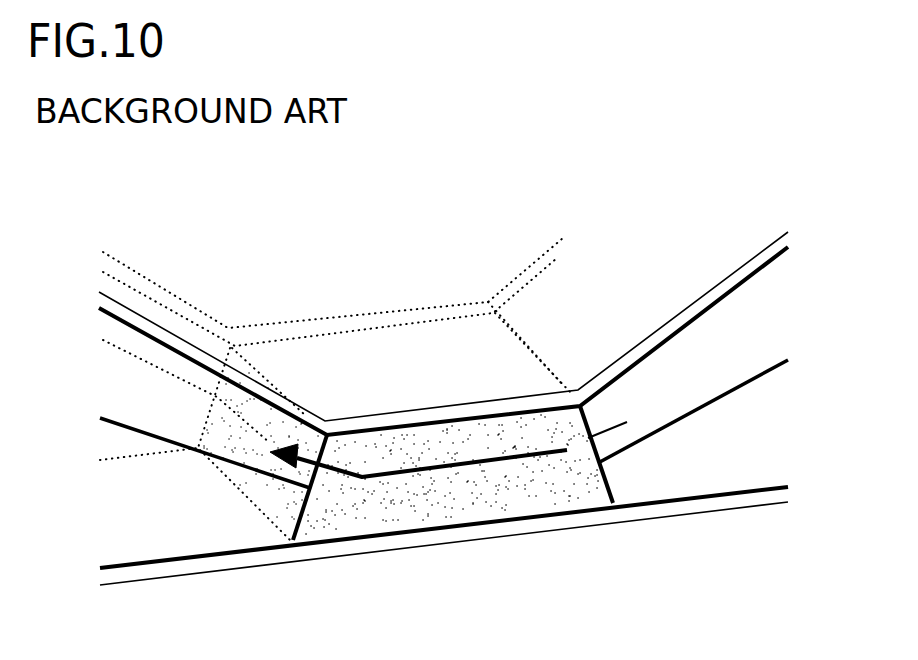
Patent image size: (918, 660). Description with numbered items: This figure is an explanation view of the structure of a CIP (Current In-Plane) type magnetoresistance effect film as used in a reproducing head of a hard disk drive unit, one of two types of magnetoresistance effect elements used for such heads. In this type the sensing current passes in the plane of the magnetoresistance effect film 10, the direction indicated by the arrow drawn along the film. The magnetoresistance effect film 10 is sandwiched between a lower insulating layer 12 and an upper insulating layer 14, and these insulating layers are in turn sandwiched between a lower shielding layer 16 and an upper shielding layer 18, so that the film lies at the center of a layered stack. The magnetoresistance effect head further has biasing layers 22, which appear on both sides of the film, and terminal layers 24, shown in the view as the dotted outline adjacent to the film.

The magnetoresistance effect film 10 is at (333, 520).
The lower insulating layer 12 is at (748, 500).
The upper insulating layer 14 is at (735, 292).
The lower shielding layer 16 is at (708, 532).
The upper shielding layer 18 is at (628, 297).
The biasing layers 22 is at (750, 433).
The terminal layers 24 is at (130, 380).